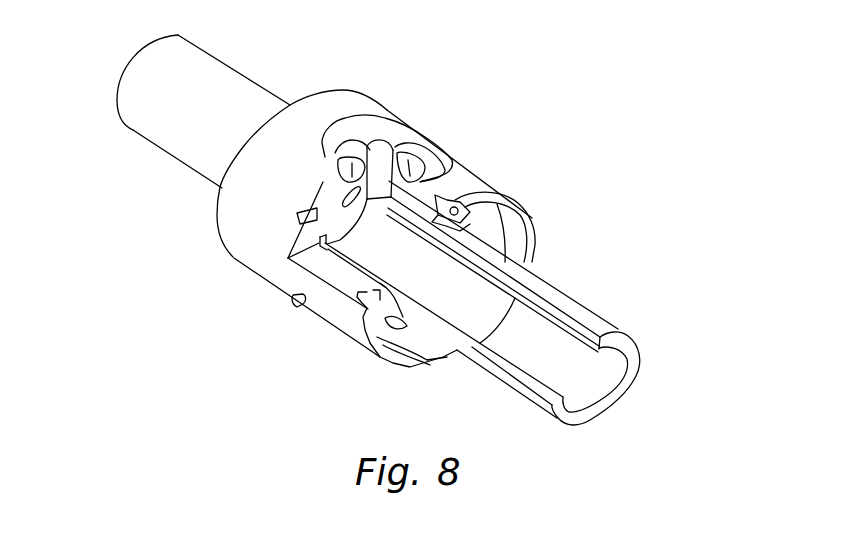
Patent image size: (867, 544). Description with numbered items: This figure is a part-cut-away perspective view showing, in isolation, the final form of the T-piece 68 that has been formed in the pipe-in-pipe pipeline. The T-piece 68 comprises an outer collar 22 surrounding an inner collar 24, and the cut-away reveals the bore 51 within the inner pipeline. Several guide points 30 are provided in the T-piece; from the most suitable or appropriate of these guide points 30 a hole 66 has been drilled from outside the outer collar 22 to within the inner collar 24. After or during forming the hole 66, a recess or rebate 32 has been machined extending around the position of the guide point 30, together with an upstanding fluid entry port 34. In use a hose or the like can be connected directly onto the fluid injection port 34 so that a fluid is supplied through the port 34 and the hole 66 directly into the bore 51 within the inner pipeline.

The T-piece 68 is at (612, 166).
The hole 66 is at (387, 133).
The fluid entry port 34 is at (396, 154).
The recess 32 is at (447, 151).
The inner collar 24 is at (567, 297).
The bore 51 is at (472, 297).
The guide points 30 is at (298, 221).
The outer collar 22 is at (380, 358).